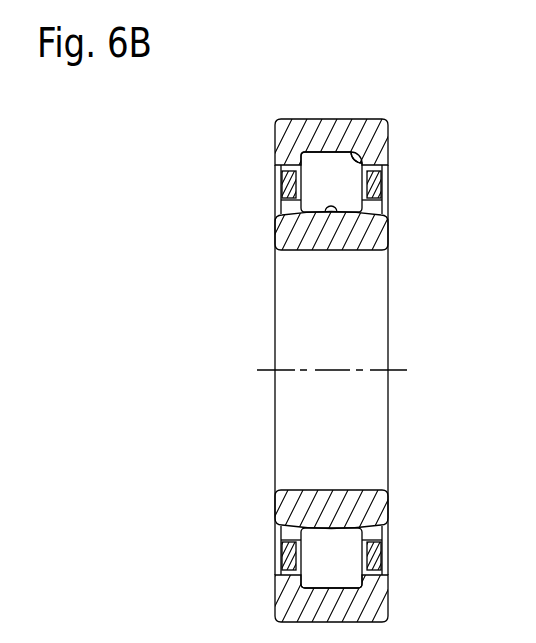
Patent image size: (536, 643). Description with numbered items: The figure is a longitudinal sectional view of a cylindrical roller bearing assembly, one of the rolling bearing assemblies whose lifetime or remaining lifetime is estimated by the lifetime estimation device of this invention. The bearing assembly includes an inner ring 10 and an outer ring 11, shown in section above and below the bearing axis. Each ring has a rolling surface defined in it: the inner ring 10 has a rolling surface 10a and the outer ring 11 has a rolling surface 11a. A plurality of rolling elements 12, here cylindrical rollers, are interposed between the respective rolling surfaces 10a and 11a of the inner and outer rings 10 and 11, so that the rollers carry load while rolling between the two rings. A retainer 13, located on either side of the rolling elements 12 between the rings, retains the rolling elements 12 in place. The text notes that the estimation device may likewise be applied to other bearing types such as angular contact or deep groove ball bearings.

The inner ring 10 is at (380, 230).
The rolling surface 10a is at (334, 213).
The outer ring 11 is at (311, 128).
The rolling surface 11a is at (363, 157).
The rolling elements 12 is at (342, 555).
The retainer 13 is at (374, 197).